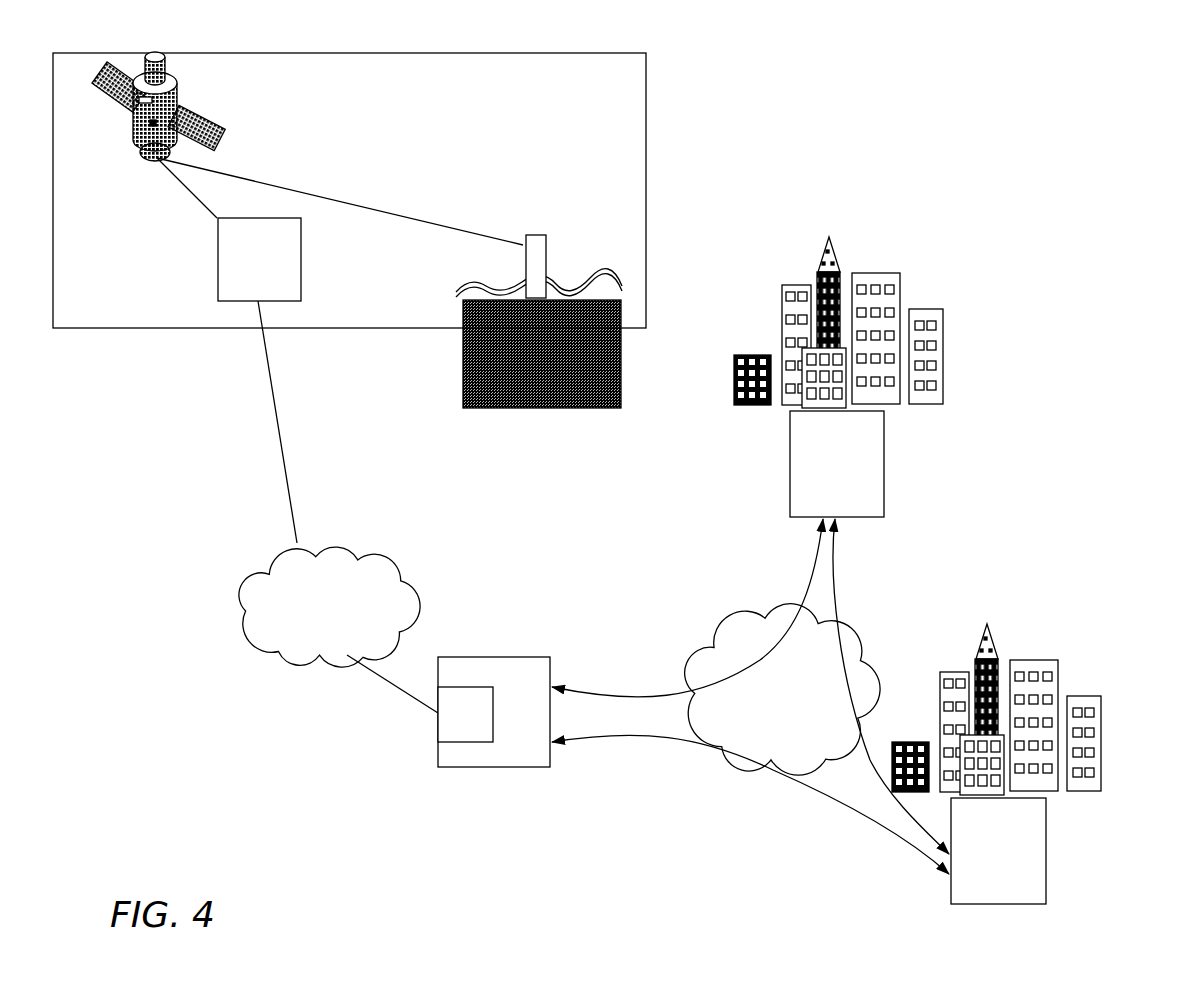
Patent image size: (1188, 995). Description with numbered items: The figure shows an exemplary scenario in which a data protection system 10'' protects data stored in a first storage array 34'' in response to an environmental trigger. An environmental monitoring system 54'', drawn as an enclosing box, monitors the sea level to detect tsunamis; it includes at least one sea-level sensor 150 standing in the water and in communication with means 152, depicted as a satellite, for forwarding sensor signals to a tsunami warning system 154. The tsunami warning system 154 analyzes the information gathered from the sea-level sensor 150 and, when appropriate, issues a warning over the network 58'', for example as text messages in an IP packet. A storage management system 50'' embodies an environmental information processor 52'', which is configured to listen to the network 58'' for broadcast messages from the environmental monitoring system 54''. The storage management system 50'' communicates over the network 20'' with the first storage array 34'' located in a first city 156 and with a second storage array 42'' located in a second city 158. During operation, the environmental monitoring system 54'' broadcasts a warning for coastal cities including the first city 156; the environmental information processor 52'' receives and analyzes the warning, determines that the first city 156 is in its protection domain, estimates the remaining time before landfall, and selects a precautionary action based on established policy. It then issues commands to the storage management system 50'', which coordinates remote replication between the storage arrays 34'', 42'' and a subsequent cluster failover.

The data protection system 10'' is at (1138, 120).
The network 20'' is at (782, 690).
The first storage array 34'' is at (837, 464).
The second storage array 42'' is at (998, 851).
The storage management system 50'' is at (494, 712).
The environmental information processor 52'' is at (465, 714).
The environmental monitoring system 54'' is at (385, 190).
The network 58'' is at (329, 607).
The sea-level sensor 150 is at (575, 225).
The means for forwarding sensor signals 152 is at (206, 106).
The tsunami warning system 154 is at (240, 270).
The first city 156 is at (845, 299).
The second city 158 is at (1013, 685).